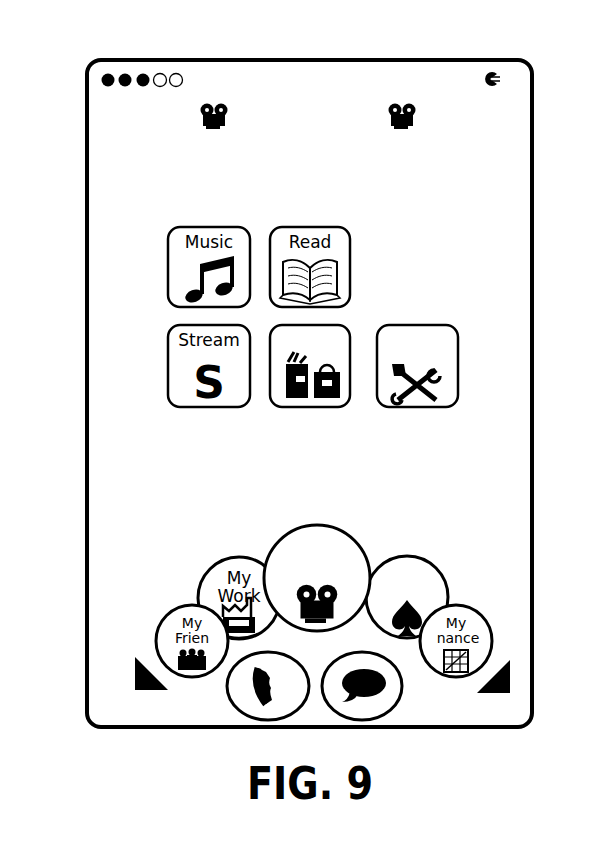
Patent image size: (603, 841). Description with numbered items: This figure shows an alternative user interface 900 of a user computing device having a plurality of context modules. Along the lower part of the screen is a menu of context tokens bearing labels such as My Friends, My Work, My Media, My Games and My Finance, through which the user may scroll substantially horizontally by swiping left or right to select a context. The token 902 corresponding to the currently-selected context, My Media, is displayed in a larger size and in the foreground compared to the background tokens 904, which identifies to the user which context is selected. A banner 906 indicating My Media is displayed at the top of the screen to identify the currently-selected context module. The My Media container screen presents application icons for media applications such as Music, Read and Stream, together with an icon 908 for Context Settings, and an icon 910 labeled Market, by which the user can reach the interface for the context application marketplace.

The interface 900 is at (371, 60).
The token 902 is at (317, 524).
The background tokens 904 is at (445, 605).
The banner 906 is at (444, 129).
The icon 908 is at (423, 325).
The icon 910 is at (288, 407).